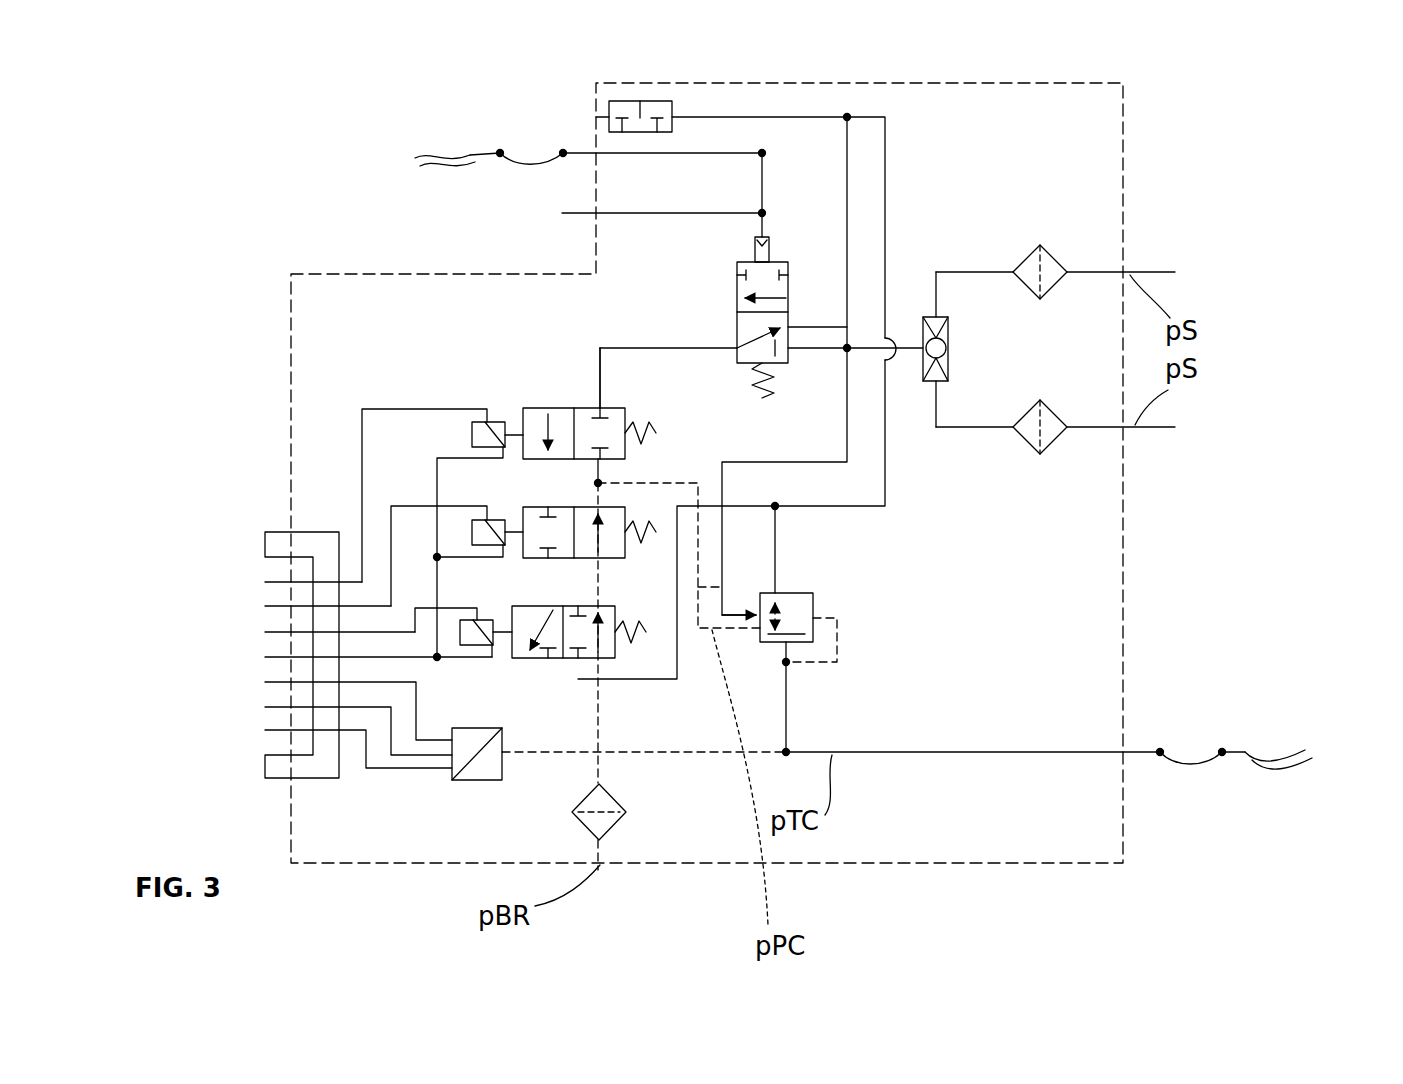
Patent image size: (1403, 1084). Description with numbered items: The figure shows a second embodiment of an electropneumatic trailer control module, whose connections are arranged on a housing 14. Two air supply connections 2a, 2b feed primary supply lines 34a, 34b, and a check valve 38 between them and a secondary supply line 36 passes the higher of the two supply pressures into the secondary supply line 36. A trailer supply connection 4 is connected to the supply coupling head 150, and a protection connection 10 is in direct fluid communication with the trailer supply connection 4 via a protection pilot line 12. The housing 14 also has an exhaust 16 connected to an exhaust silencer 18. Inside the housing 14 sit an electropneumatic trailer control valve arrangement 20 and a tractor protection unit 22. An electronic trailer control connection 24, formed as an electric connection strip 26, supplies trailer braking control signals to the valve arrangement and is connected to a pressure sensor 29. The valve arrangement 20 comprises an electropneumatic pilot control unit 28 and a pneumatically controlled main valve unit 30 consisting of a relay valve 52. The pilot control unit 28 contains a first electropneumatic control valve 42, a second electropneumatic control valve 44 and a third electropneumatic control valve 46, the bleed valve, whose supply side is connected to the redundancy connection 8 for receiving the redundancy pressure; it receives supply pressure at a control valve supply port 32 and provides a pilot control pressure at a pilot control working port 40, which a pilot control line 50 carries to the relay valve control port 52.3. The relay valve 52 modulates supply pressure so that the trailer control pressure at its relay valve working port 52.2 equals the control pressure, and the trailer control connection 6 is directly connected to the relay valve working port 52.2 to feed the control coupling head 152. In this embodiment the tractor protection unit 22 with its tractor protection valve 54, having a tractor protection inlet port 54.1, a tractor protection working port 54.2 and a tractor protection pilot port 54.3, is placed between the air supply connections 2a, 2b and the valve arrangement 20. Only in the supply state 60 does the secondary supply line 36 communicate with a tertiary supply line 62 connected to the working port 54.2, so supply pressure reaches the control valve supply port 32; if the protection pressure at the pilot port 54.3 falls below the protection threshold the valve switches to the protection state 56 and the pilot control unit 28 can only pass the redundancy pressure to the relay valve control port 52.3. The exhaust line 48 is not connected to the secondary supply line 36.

The air supply connection 2a is at (1125, 270).
The air supply connection 2b is at (1125, 428).
The trailer supply connection 4 is at (596, 152).
The trailer control connection 6 is at (1125, 752).
The redundancy connection 8 is at (600, 865).
The protection connection 10 is at (590, 213).
The protection pilot line 12 is at (762, 183).
The housing 14 is at (360, 865).
The exhaust 16 is at (597, 117).
The exhaust silencer 18 is at (650, 101).
The electropneumatic trailer control valve arrangement 20 is at (698, 704).
The tractor protection unit 22 is at (799, 283).
The electronic trailer control connection 24 is at (336, 616).
The electric connection strip 26 is at (290, 530).
The electropneumatic pilot control unit 28 is at (509, 498).
The pressure sensor 29 is at (478, 782).
The main valve unit 30 is at (847, 629).
The control valve supply port 32 is at (596, 404).
The primary supply line 34a is at (960, 270).
The primary supply line 34b is at (980, 427).
The secondary supply line 36 is at (812, 352).
The check valve 38 is at (955, 335).
The pilot control working port 40 is at (658, 478).
The first electropneumatic control valve 42 is at (555, 460).
The second electropneumatic control valve 44 is at (555, 558).
The third electropneumatic control valve 46 is at (528, 658).
The exhaust line 48 is at (885, 480).
The pilot control line 50 is at (722, 587).
The relay valve 52 is at (813, 610).
The relay valve working port 52.2 is at (790, 648).
The relay valve control port 52.3 is at (758, 636).
The tractor protection valve 54 is at (755, 291).
The tractor protection inlet port 54.1 is at (790, 363).
The tractor protection working port 54.2 is at (738, 355).
The tractor protection pilot port 54.3 is at (768, 246).
The protection state 56 is at (735, 327).
The supply state 60 is at (794, 292).
The tertiary supply line 62 is at (650, 348).
The supply coupling head 150 is at (453, 146).
The control coupling head 152 is at (1278, 746).